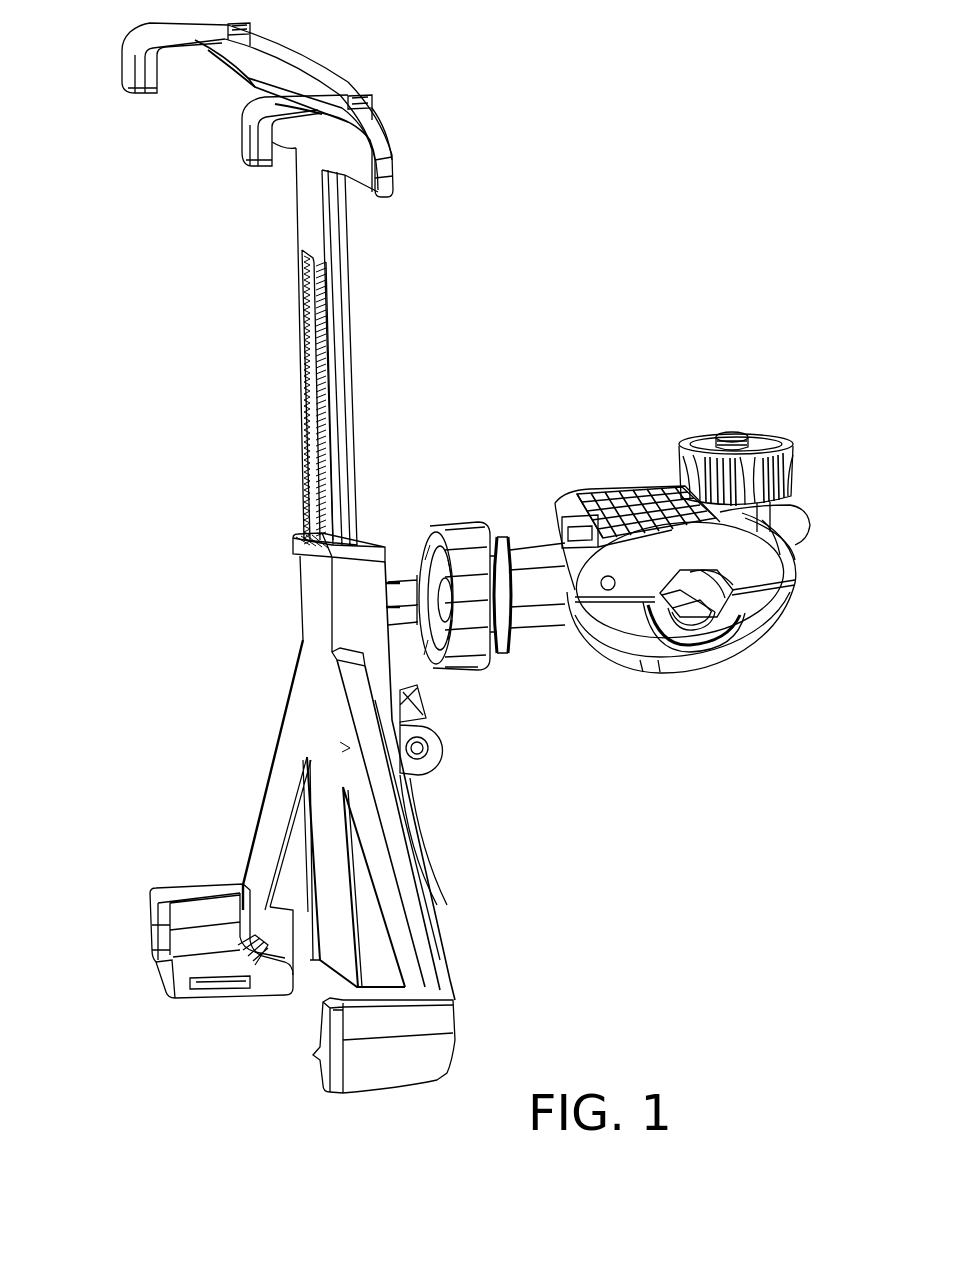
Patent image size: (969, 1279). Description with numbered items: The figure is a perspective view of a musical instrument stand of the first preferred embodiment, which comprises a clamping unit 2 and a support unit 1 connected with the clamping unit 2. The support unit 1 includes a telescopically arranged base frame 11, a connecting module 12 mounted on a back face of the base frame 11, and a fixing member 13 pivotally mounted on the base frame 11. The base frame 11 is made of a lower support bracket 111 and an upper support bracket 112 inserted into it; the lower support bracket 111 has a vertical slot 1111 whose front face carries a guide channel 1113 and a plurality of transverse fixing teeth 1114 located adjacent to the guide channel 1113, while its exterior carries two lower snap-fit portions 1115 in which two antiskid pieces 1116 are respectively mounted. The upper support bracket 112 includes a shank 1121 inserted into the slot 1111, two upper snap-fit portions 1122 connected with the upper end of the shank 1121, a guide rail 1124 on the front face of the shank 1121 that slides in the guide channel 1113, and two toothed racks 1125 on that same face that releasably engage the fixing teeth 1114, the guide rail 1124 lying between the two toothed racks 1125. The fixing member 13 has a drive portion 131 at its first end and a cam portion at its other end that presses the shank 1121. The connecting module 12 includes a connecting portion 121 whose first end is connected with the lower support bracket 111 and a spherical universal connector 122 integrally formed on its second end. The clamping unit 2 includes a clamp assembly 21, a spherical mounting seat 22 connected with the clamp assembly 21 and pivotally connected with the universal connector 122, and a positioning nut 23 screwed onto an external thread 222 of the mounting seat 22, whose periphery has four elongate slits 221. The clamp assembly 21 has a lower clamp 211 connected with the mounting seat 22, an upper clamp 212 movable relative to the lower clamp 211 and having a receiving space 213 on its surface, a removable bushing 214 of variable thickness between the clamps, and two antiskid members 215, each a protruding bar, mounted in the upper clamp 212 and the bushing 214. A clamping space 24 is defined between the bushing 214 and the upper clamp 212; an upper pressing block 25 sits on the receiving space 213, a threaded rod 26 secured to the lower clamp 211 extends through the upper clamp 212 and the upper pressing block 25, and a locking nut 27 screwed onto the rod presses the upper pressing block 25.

The support unit 1 is at (165, 528).
The base frame 11 is at (262, 532).
The lower support bracket 111 is at (300, 638).
The slot 1111 is at (296, 552).
The guide channel 1113 is at (312, 583).
The fixing teeth 1114 is at (350, 748).
The lower snap-fit portions 1115 is at (195, 950).
The antiskid pieces 1116 is at (212, 978).
The upper support bracket 112 is at (297, 200).
The shank 1121 is at (312, 236).
The upper snap-fit portions 1122 is at (160, 27).
The guide rail 1124 is at (305, 305).
The toothed racks 1125 is at (308, 345).
The connecting module 12 is at (405, 527).
The connecting portion 121 is at (400, 590).
The universal connector 122 is at (415, 530).
The fixing member 13 is at (445, 762).
The drive portion 131 is at (408, 790).
The clamping unit 2 is at (697, 815).
The clamp assembly 21 is at (718, 705).
The lower clamp 211 is at (650, 655).
The upper clamp 212 is at (756, 612).
The receiving space 213 is at (752, 556).
The bushing 214 is at (690, 640).
The antiskid members 215 is at (727, 623).
The mounting seat 22 is at (494, 520).
The slits 221 is at (527, 640).
The external thread 222 is at (500, 643).
The positioning nut 23 is at (460, 530).
The clamping space 24 is at (690, 583).
The upper pressing block 25 is at (760, 510).
The threaded rod 26 is at (733, 437).
The locking nut 27 is at (757, 480).